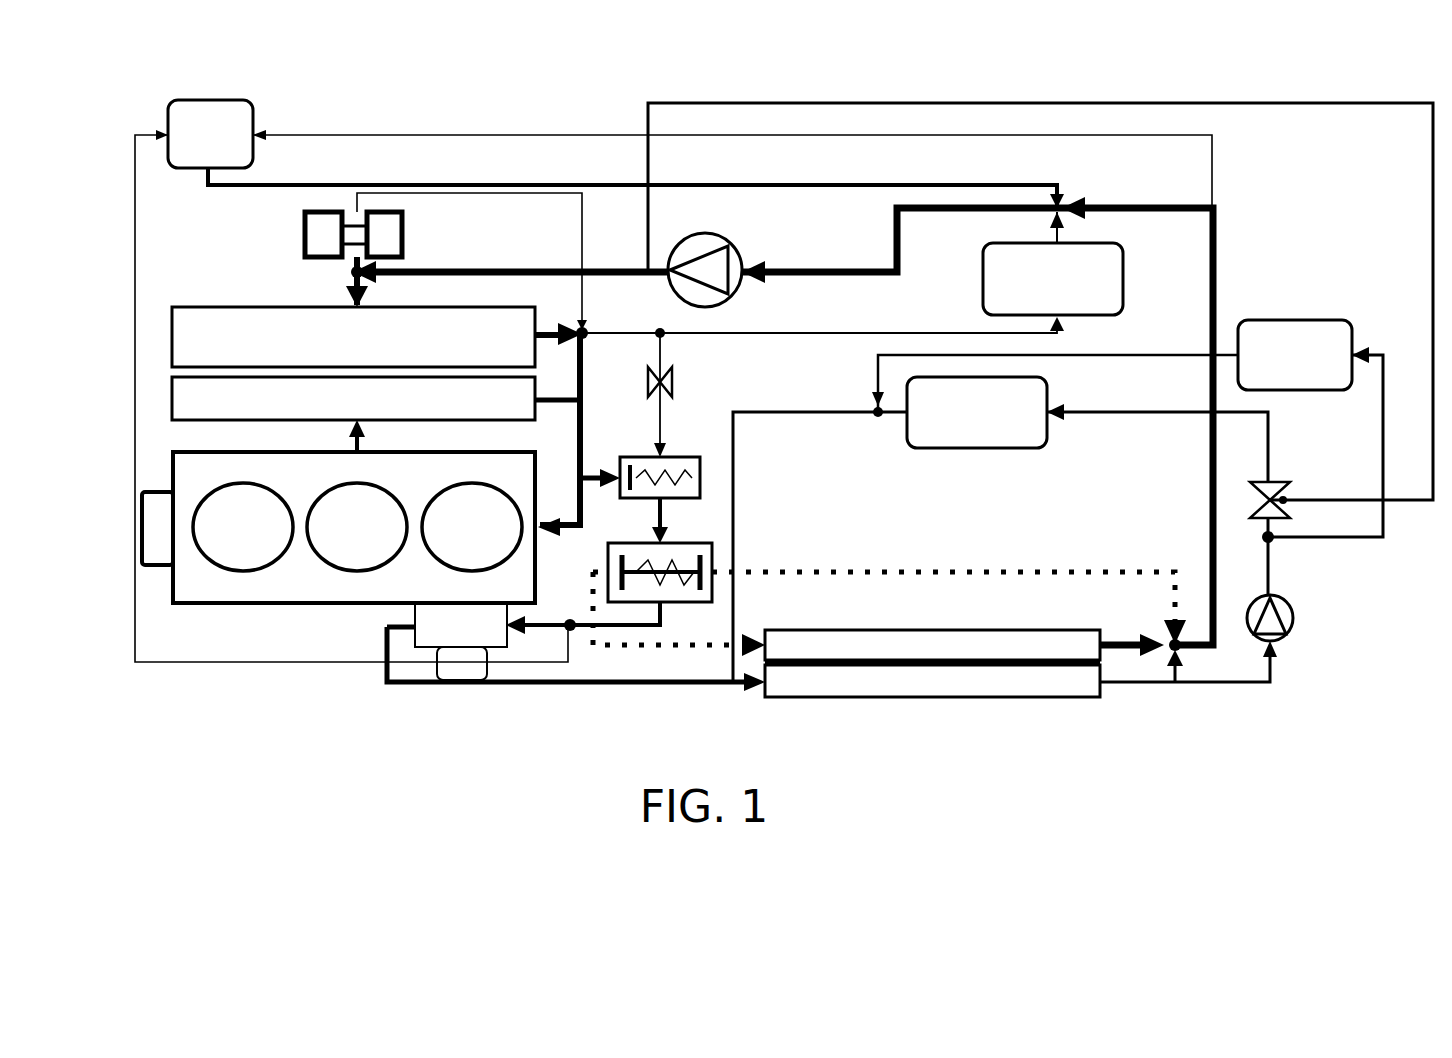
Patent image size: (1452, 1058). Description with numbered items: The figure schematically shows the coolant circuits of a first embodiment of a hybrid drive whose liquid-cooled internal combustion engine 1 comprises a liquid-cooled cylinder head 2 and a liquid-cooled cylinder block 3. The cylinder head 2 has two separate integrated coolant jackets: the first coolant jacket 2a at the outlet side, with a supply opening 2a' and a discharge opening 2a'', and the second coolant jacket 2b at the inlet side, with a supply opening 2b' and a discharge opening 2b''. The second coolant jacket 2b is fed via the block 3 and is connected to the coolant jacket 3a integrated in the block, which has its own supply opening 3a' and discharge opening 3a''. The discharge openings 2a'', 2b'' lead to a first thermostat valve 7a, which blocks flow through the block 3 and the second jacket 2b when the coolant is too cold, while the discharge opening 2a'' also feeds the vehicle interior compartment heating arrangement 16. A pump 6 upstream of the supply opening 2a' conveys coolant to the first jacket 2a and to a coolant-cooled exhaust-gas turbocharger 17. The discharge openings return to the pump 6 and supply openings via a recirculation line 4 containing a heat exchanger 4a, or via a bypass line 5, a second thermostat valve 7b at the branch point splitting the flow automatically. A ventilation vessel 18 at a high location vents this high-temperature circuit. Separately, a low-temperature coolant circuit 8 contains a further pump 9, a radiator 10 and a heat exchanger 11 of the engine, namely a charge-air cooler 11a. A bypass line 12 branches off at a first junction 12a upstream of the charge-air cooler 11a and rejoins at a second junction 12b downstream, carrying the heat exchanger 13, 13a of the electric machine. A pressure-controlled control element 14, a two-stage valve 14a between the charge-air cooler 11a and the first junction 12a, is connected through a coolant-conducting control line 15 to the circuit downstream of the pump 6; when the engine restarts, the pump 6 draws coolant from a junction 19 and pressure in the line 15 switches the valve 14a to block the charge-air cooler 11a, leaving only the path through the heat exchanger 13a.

The internal combustion engine 1 is at (100, 212).
The cylinder head 2 is at (124, 375).
The first coolant jacket 2a is at (377, 337).
The supply opening 2a' is at (305, 284).
The discharge opening 2a'' is at (548, 305).
The second coolant jacket 2b is at (396, 434).
The supply opening 2b' is at (404, 433).
The discharge opening 2b'' is at (553, 369).
The cylinder block 3 is at (255, 586).
The coolant jacket 3a is at (357, 538).
The supply opening 3a' is at (557, 561).
The discharge opening 3a'' is at (299, 437).
The recirculation line 4 is at (645, 650).
The heat exchanger 4a is at (932, 646).
The bypass line 5 is at (790, 568).
The pump 6 is at (735, 250).
The first thermostat valve 7a is at (686, 455).
The second thermostat valve 7b is at (672, 556).
The low-temperature coolant circuit 8 is at (852, 547).
The further pump 9 is at (1295, 628).
The radiator 10 is at (932, 681).
The heat exchanger 11 is at (1087, 429).
The charge-air cooler 11a is at (1087, 429).
The bypass line 12 is at (1145, 345).
The first junction 12a is at (1275, 540).
The second junction 12b is at (872, 418).
The heat exchanger 13 is at (1310, 428).
The electric machine heat exchanger 13a is at (1310, 428).
The pressure-controlled control element 14 is at (1189, 504).
The valve 14a is at (1253, 505).
The control line 15 is at (975, 101).
The vehicle interior compartment heating arrangement 16 is at (849, 275).
The exhaust-gas turbocharger 17 is at (302, 234).
The ventilation vessel 18 is at (690, 216).
The junction 19 is at (1185, 655).